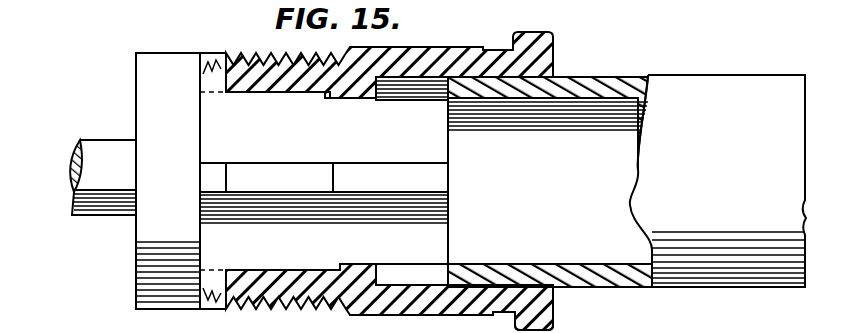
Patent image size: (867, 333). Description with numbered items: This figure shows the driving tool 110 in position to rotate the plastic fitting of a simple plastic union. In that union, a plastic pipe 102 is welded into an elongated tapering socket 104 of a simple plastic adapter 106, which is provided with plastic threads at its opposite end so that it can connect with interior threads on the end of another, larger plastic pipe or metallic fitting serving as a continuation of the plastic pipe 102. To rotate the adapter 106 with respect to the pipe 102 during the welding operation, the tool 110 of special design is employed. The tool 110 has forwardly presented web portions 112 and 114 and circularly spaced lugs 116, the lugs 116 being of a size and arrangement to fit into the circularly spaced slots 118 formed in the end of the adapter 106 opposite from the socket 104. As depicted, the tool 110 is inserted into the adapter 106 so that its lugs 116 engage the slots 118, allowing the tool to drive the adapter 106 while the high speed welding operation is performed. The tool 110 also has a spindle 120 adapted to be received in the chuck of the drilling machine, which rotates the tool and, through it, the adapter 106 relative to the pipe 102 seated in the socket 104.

The plastic pipe 102 is at (613, 78).
The elongated tapering socket 104 is at (511, 306).
The plastic adapter 106 is at (415, 57).
The tool 110 is at (168, 192).
The web portion 112 is at (325, 98).
The web portion 114 is at (397, 101).
The lugs 116 is at (225, 80).
The slots 118 is at (226, 177).
The spindle 120 is at (121, 210).